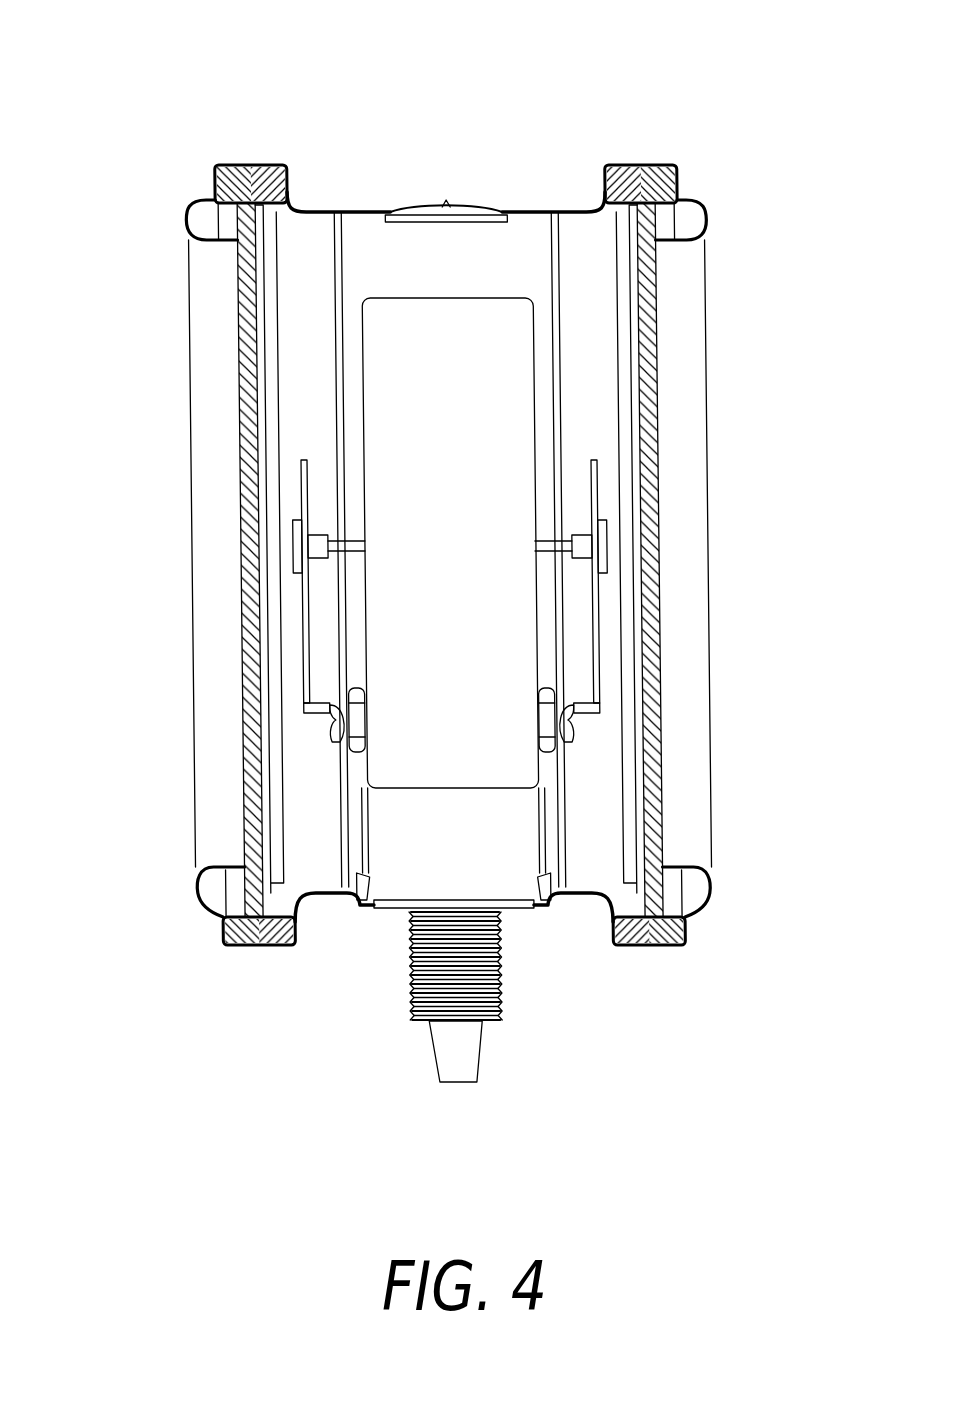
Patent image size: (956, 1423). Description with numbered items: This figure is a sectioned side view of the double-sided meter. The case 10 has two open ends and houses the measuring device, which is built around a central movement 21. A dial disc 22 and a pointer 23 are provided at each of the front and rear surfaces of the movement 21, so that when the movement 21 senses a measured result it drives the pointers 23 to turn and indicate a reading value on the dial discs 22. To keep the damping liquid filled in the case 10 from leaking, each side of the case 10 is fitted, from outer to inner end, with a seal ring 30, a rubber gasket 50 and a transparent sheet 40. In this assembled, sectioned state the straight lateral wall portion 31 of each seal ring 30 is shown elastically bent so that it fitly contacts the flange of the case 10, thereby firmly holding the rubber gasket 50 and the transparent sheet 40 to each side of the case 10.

The case 10 is at (347, 212).
The movement 21 is at (460, 330).
The dial disc 22 is at (338, 338).
The pointer 23 is at (308, 640).
The seal ring 30 is at (207, 534).
The straight lateral wall portion 31 is at (236, 165).
The transparent sheet 40 is at (245, 412).
The rubber gasket 50 is at (268, 165).